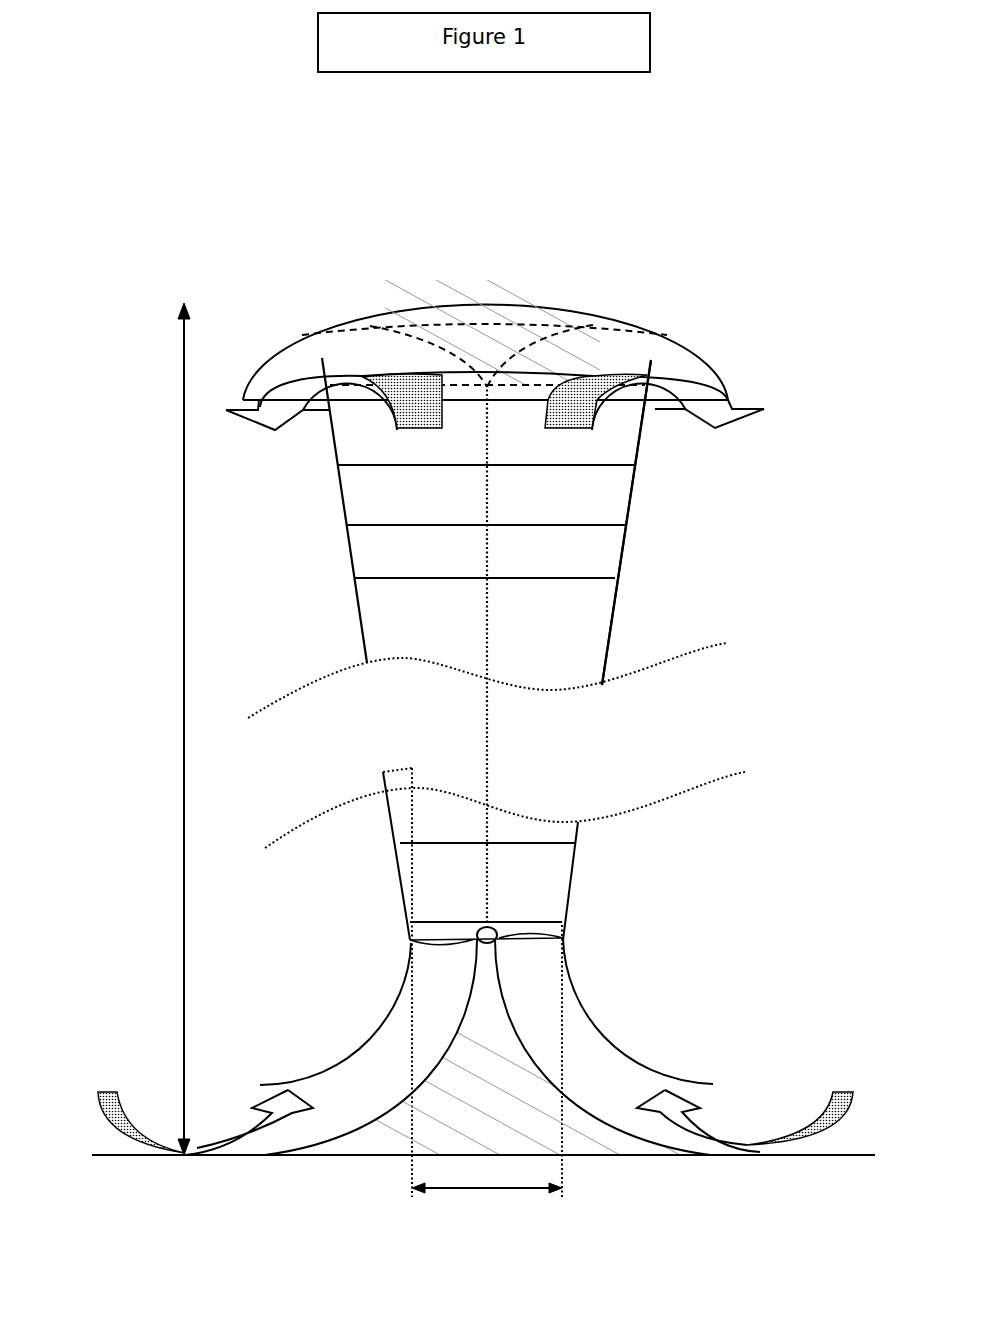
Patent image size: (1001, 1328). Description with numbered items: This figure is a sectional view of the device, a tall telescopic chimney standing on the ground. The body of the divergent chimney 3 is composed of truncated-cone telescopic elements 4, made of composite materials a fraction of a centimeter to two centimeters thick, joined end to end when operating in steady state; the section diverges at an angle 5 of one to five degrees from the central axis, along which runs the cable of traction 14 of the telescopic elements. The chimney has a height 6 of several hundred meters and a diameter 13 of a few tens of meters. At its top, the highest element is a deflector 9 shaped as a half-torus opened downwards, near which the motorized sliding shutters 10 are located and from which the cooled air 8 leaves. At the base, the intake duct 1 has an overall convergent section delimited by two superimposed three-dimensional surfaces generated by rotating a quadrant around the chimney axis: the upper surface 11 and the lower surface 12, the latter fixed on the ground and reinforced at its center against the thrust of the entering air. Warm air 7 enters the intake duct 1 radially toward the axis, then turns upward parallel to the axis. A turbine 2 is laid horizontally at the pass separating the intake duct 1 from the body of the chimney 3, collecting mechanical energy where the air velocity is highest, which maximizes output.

The intake duct 1 is at (575, 1033).
The turbine 2 is at (560, 922).
The divergent chimney 3 is at (613, 625).
The telescopic element 4 is at (548, 558).
The angle 5 is at (397, 763).
The height 6 is at (184, 889).
The warm air 7 is at (807, 1086).
The cooled air 8 is at (709, 434).
The deflector 9 is at (675, 335).
The motorized sliding shutters 10 is at (648, 375).
The upper 3D-surface 11 is at (348, 1053).
The lower 3D-surface 12 is at (432, 1068).
The diameter 13 is at (488, 1188).
The cable of traction 14 is at (485, 607).